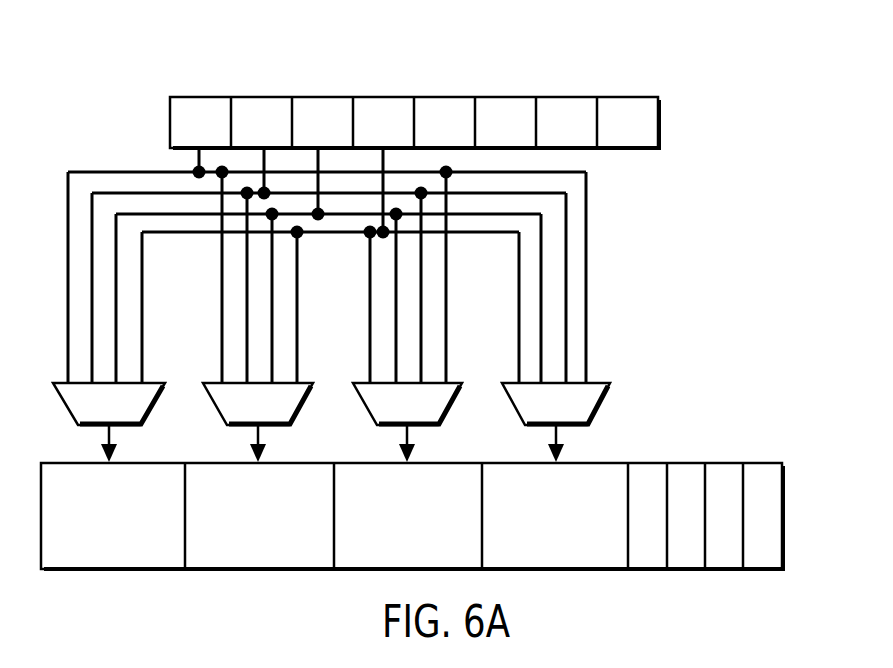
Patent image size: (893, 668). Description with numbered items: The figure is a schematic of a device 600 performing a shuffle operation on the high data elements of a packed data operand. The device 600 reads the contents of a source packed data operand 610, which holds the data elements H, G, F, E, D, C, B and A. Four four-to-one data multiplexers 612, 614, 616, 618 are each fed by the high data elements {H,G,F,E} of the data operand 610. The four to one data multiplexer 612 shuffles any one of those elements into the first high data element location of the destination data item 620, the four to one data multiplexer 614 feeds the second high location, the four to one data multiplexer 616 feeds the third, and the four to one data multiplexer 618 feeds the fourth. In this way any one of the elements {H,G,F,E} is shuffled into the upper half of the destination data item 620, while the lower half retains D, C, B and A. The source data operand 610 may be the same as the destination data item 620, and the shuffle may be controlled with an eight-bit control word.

The device 600 is at (93, 107).
The source packed data operand 610 is at (661, 122).
The four to one data multiplexer 612 is at (602, 382).
The four to one data multiplexer 614 is at (454, 382).
The four to one data multiplexer 616 is at (304, 382).
The four to one data multiplexer 618 is at (155, 382).
The destination data item 620 is at (786, 478).